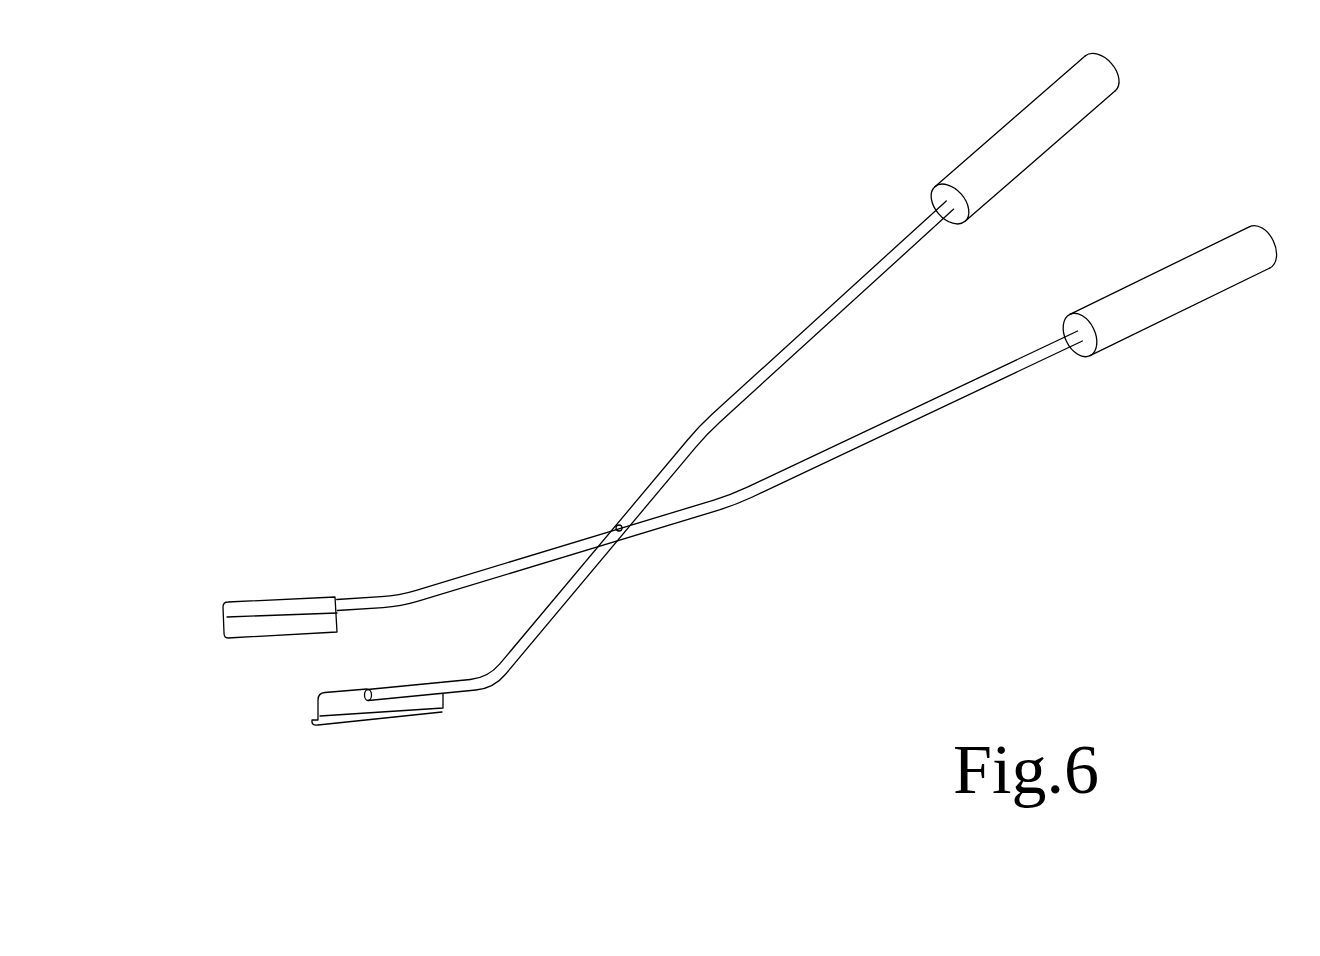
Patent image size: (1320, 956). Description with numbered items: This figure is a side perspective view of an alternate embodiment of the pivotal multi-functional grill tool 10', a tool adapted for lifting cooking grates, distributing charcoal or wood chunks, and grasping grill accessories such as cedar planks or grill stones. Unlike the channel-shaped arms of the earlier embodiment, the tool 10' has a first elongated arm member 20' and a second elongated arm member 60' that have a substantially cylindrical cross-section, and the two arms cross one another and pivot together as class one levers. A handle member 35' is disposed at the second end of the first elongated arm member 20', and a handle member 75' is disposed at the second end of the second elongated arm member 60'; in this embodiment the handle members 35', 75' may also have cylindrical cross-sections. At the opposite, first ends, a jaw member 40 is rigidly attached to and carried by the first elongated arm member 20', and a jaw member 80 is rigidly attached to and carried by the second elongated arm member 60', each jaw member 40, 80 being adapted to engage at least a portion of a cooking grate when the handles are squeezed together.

The pivotal multi-functional grill tool 10' is at (698, 430).
The first elongated arm member 20' is at (710, 471).
The second elongated arm member 60' is at (659, 451).
The handle member 75' is at (1073, 138).
The handle member 35' is at (1169, 329).
The jaw member 40 is at (222, 625).
The jaw member 80 is at (333, 707).